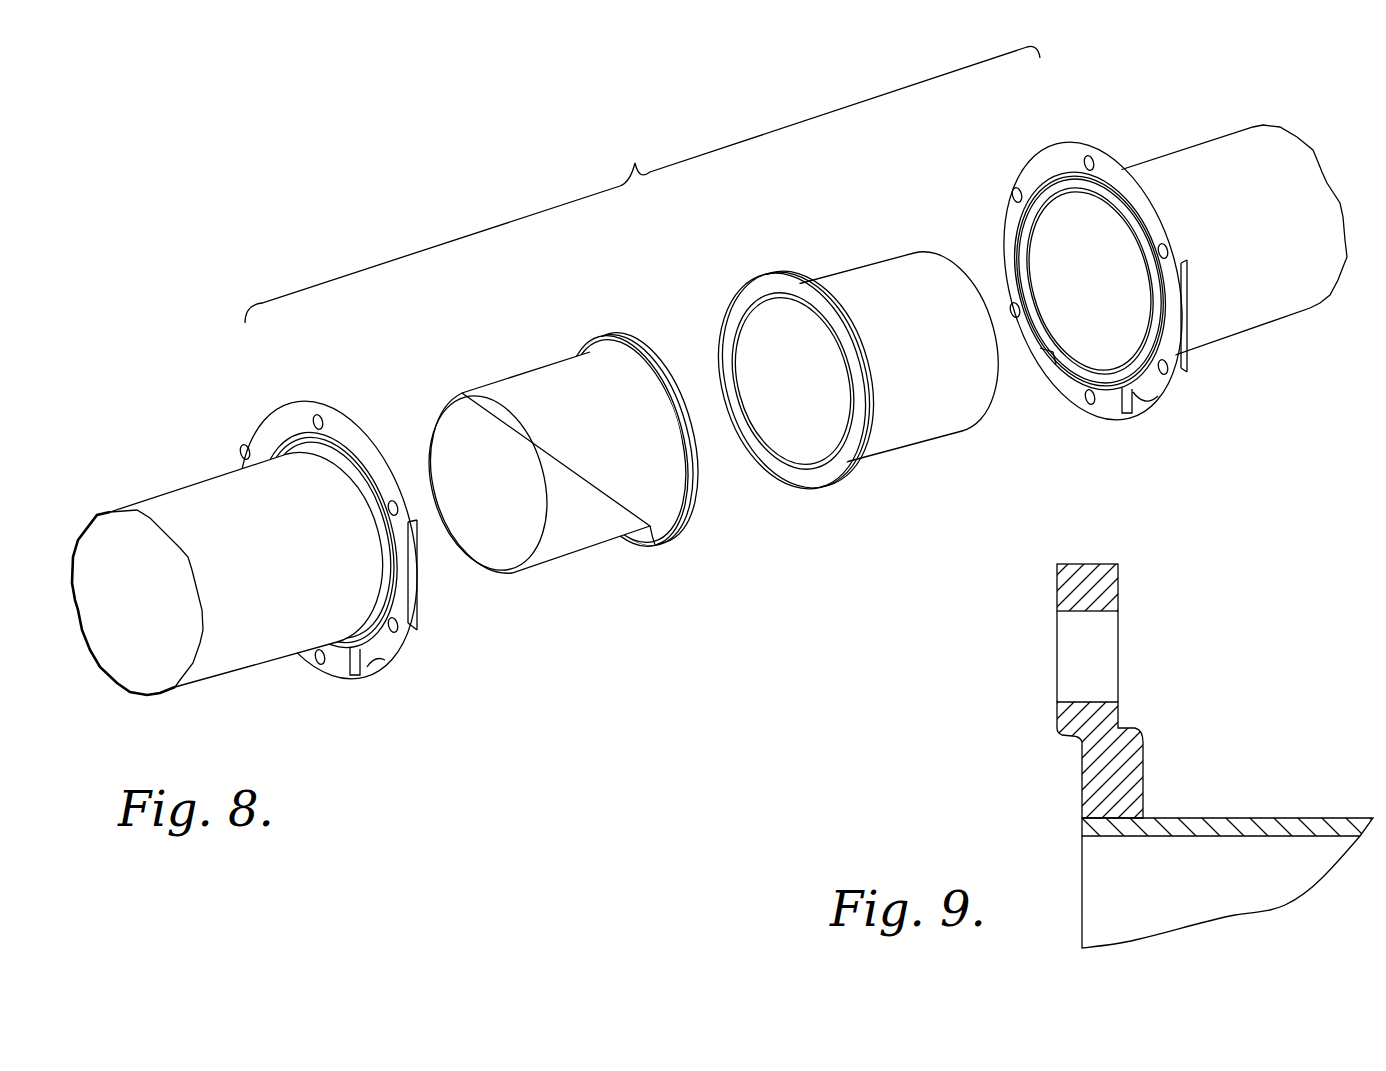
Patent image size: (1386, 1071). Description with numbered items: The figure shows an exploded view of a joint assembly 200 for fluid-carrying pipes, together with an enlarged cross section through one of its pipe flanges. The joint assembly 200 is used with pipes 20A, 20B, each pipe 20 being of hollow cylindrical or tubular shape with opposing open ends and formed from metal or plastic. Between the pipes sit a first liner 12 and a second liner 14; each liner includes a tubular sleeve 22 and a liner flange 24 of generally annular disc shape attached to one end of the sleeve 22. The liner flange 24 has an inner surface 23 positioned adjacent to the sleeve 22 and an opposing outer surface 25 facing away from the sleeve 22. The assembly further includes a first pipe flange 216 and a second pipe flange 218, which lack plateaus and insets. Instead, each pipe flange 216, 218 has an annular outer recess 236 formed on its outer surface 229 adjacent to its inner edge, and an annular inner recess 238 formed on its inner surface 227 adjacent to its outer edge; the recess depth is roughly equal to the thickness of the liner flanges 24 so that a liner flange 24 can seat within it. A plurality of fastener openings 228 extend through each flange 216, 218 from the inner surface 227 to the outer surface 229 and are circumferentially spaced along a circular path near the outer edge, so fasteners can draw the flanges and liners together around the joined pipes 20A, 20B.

In FIG. 8, the joint assembly 200 is at (600, 152).
In FIG. 8, the pipe 20A is at (155, 502).
In FIG. 8, the pipe 20B is at (1243, 133).
In FIG. 9, the pipe 20 is at (1280, 895).
In FIG. 8, the first pipe flange 216 is at (263, 422).
In FIG. 9, the first pipe flange 216 is at (1130, 678).
In FIG. 8, the second pipe flange 218 is at (1032, 152).
In FIG. 9, the second pipe flange 218 is at (1130, 678).
In FIG. 8, the inner recess 238 is at (339, 438).
In FIG. 9, the inner recess 238 is at (1141, 720).
In FIG. 8, the fastener openings 228 is at (395, 630).
In FIG. 9, the fastener openings 228 is at (1057, 653).
In FIG. 8, the inner surface 227 is at (340, 665).
In FIG. 9, the inner surface 227 is at (1145, 762).
In FIG. 8, the outer surface 229 is at (1162, 385).
In FIG. 9, the outer surface 229 is at (1057, 588).
In FIG. 8, the outer recess 236 is at (1069, 372).
In FIG. 9, the outer recess 236 is at (1060, 752).
In FIG. 8, the first liner 12 is at (512, 350).
In FIG. 8, the second liner 14 is at (805, 218).
In FIG. 8, the sleeve 22 is at (485, 393).
In FIG. 8, the liner flange 24 is at (585, 333).
In FIG. 8, the inner surface 23 is at (655, 537).
In FIG. 8, the outer surface 25 is at (818, 483).